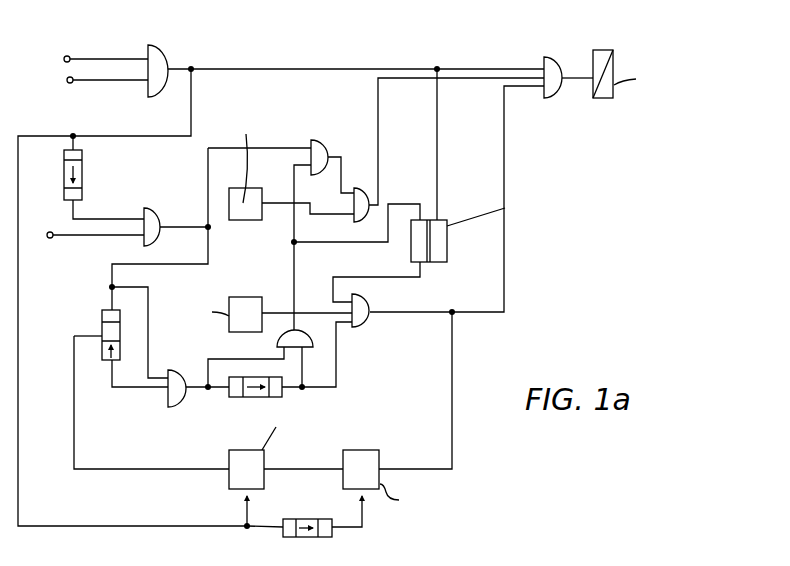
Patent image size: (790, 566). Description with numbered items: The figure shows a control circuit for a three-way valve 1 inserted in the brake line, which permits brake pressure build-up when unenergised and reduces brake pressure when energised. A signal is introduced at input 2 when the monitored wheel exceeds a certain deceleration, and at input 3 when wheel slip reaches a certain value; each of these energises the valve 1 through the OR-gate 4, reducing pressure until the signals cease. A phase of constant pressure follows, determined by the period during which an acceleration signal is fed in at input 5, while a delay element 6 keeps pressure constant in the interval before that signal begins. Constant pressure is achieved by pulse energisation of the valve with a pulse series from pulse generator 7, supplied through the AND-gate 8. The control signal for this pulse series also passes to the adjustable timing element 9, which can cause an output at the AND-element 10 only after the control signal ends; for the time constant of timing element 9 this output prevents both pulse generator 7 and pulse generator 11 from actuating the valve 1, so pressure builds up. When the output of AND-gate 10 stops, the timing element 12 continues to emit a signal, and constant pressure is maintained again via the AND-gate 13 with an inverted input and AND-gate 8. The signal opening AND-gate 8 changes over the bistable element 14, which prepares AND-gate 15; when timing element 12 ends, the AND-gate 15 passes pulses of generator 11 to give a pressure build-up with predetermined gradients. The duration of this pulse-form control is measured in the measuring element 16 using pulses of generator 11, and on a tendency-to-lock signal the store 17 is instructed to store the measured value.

The three-way valve 1 is at (616, 52).
The deceleration signal input 2 is at (69, 56).
The wheel slip signal input 3 is at (70, 83).
The OR-gate 4 is at (547, 57).
The acceleration signal input 5 is at (50, 238).
The delay element 6 is at (84, 174).
The pulse generator 7 is at (249, 222).
The AND-gate 8 is at (356, 187).
The timing element 9 is at (101, 328).
The AND-element 10 is at (178, 396).
The pulse generator 11 is at (245, 300).
The timing element 12 is at (266, 398).
The AND-gate with inverted input 13 is at (307, 343).
The bistable element 14 is at (448, 250).
The AND-gate 15 is at (372, 318).
The measuring element 16 is at (381, 456).
The store 17 is at (228, 483).